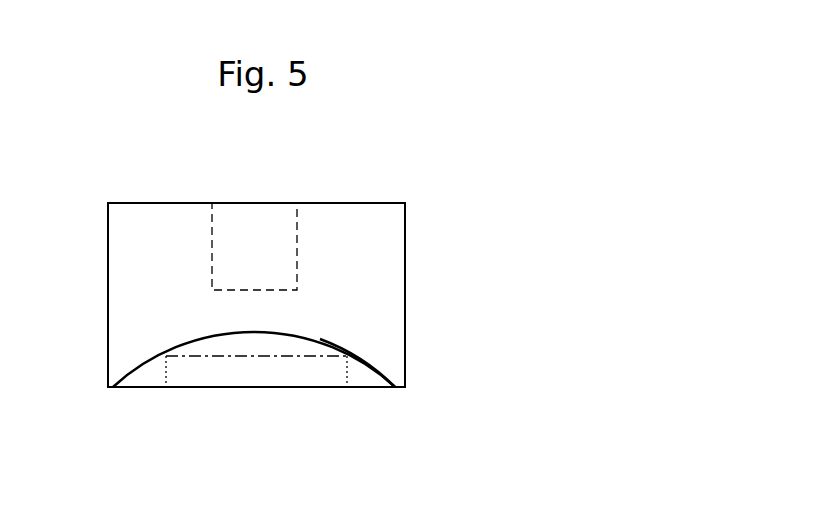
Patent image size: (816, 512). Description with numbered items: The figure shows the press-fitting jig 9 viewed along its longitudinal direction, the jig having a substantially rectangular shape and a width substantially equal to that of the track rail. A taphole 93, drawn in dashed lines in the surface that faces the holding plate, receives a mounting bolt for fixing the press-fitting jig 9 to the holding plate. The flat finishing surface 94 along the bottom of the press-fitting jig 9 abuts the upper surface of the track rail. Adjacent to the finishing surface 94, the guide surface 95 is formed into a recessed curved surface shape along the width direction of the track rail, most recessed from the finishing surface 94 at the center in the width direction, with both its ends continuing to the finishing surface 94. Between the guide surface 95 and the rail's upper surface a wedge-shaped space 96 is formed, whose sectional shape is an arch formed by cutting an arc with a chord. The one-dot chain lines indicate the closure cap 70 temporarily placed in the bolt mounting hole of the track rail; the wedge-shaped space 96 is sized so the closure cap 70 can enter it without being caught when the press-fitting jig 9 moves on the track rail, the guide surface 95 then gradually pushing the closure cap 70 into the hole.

The press-fitting jig 9 is at (421, 214).
The taphole 93 is at (297, 246).
The closure cap 70 is at (185, 353).
The finishing surface 94 is at (143, 389).
The guide surface 95 is at (313, 342).
The wedge-shaped space 96 is at (361, 374).